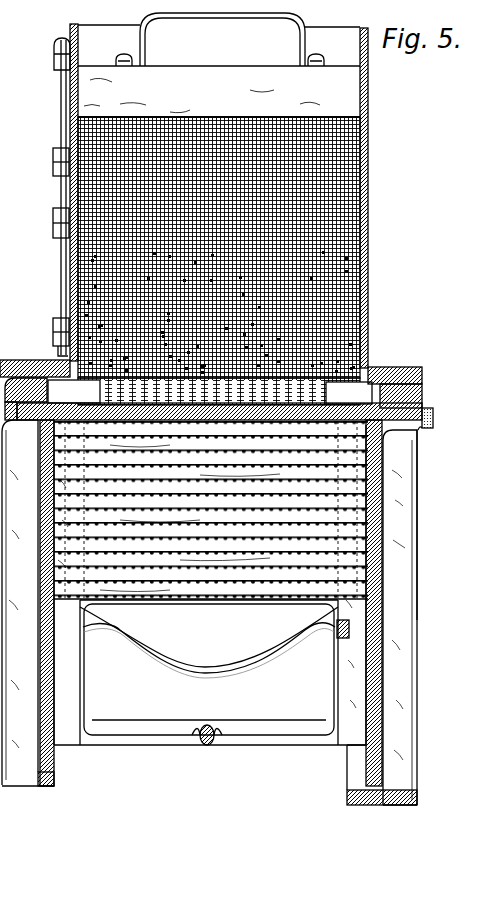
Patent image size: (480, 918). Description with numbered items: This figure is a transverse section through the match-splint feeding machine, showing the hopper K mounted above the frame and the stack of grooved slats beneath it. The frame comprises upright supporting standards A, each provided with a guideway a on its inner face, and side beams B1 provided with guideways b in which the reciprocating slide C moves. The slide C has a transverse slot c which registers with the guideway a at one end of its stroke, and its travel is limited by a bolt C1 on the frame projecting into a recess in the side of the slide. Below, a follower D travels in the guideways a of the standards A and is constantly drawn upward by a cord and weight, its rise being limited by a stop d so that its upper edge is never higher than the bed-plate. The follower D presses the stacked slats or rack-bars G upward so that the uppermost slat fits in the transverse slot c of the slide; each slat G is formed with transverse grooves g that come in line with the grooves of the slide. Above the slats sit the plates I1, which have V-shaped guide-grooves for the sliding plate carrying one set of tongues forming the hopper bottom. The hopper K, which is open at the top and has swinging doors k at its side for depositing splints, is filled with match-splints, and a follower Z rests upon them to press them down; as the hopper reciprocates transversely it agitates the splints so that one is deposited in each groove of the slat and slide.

The hopper K is at (62, 264).
The swinging door k is at (222, 39).
The follower Z is at (202, 95).
The guide plate I1 is at (50, 390).
The side beam B1 is at (211, 390).
The bolt C1 is at (434, 418).
The guideway b is at (420, 426).
The reciprocating slide C is at (400, 525).
The slat G is at (211, 510).
The transverse groove g is at (212, 426).
The guideway a is at (394, 672).
The transverse slot c is at (211, 603).
The supporting standard A is at (209, 612).
The follower D is at (209, 672).
The stop d is at (337, 636).